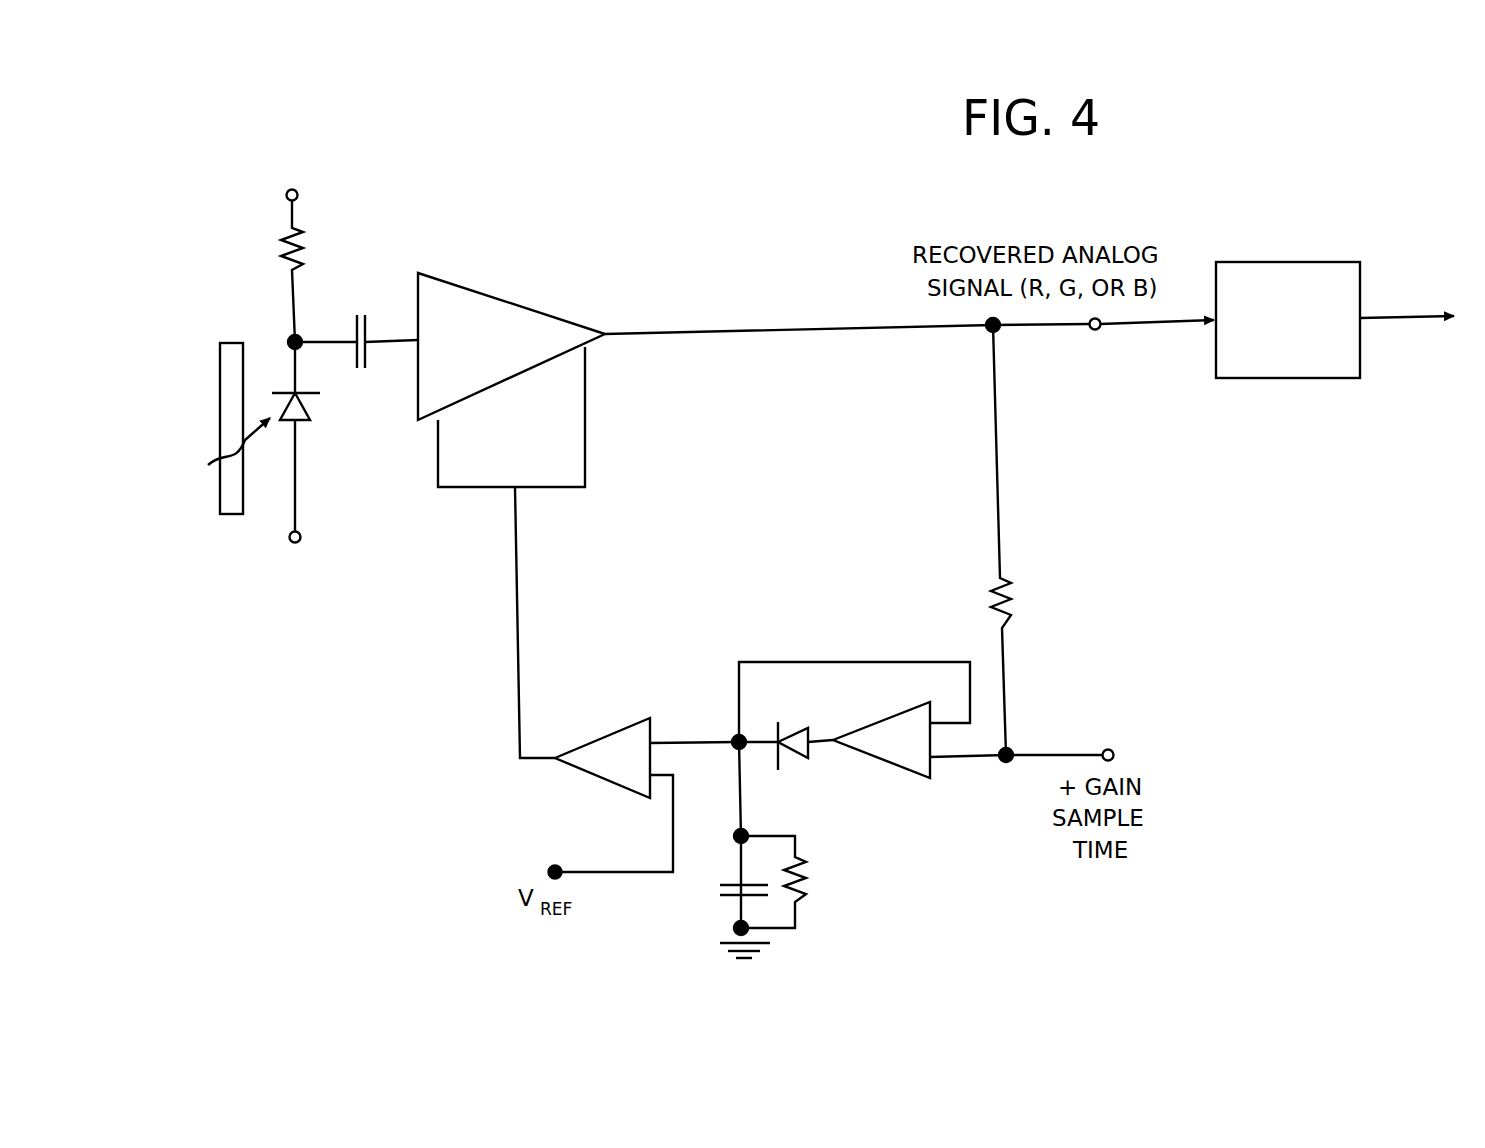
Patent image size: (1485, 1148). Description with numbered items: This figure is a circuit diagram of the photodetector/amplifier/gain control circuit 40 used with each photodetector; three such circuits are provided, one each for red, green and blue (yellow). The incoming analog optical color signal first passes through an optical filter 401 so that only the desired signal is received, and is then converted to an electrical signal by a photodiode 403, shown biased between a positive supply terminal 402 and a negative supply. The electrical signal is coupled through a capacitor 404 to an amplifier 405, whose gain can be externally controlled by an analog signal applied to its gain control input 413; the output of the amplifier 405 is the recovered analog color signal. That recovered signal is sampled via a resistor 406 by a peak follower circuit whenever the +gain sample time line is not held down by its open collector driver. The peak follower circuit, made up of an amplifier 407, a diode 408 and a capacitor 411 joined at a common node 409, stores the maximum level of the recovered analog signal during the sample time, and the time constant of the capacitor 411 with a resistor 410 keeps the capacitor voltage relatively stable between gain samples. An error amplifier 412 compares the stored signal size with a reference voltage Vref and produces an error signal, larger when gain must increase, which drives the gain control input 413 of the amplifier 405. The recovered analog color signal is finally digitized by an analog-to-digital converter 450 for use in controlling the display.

The photodetector/amplifier/gain control circuit 40 is at (687, 244).
The optical filter 401 is at (223, 524).
The resistor R1 / +V supply 402 is at (288, 264).
The photodiode 403 is at (335, 446).
The capacitor C1 404 is at (379, 347).
The amplifier 405 is at (511, 336).
The resistor 406 is at (1002, 540).
The amplifier 407 is at (881, 766).
The diode 408 is at (786, 723).
The node 409 is at (716, 705).
The resistor 410 is at (813, 888).
The capacitor 411 is at (690, 881).
The error amplifier 412 is at (602, 783).
The gain control input 413 is at (537, 417).
The analog-to-digital (A/D) converter 450 is at (1296, 347).